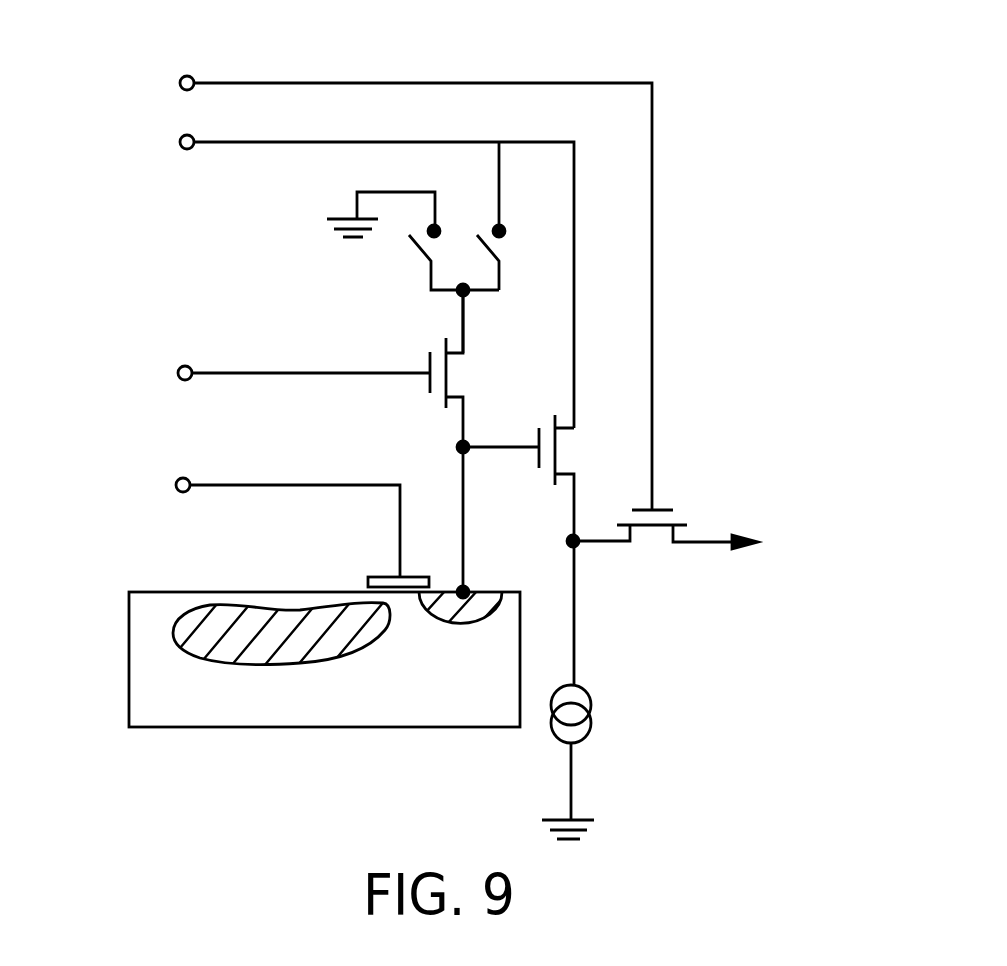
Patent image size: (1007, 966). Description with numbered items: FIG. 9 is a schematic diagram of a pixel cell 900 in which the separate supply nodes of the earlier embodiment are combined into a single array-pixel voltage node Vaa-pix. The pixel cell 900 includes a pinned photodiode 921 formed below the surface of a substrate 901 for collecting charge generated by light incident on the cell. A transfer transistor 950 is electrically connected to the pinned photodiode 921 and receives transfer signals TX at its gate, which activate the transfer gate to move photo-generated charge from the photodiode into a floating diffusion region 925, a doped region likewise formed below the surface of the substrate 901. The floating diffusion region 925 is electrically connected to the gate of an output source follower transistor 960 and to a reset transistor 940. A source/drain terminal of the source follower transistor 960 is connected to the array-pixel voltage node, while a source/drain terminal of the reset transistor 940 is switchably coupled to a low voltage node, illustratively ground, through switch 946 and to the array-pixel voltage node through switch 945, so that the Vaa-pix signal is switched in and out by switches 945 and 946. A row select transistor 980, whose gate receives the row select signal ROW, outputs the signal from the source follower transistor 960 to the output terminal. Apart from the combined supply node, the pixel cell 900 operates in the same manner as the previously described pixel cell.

The pixel cell 900 is at (712, 72).
The substrate 901 is at (182, 719).
The pinned photodiode 921 is at (167, 570).
The floating diffusion region 925 is at (467, 612).
The reset transistor 940 is at (418, 392).
The switch 945 is at (517, 252).
The switch 946 is at (411, 277).
The transfer transistor 950 is at (390, 573).
The source follower transistor 960 is at (537, 418).
The row select transistor 980 is at (672, 502).